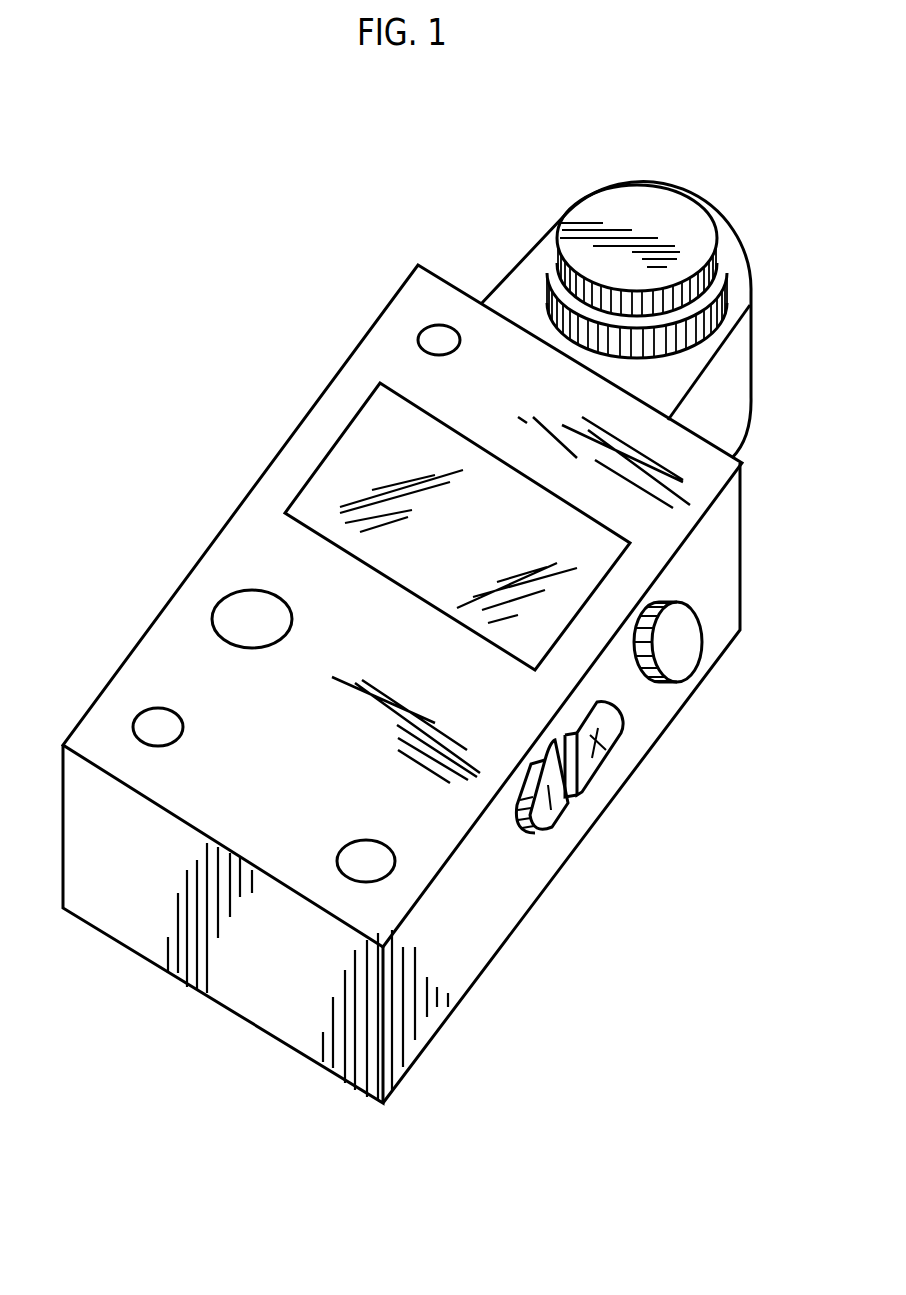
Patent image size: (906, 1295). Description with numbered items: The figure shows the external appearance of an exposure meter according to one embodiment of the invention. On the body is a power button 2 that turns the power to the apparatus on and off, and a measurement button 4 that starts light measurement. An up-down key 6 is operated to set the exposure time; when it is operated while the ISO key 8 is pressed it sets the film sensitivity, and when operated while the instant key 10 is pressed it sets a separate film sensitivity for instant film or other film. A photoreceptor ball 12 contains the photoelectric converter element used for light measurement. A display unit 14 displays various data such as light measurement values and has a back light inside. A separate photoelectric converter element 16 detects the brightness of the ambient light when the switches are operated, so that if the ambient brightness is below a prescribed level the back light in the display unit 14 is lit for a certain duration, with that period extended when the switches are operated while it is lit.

The power button 2 is at (233, 605).
The measurement button 4 is at (682, 650).
The up-down key 6 is at (558, 805).
The ISO key 8 is at (147, 720).
The instant key 10 is at (380, 867).
The photoreceptor ball 12 is at (666, 202).
The display unit 14 is at (358, 438).
The photoelectric converter element 16 is at (430, 342).